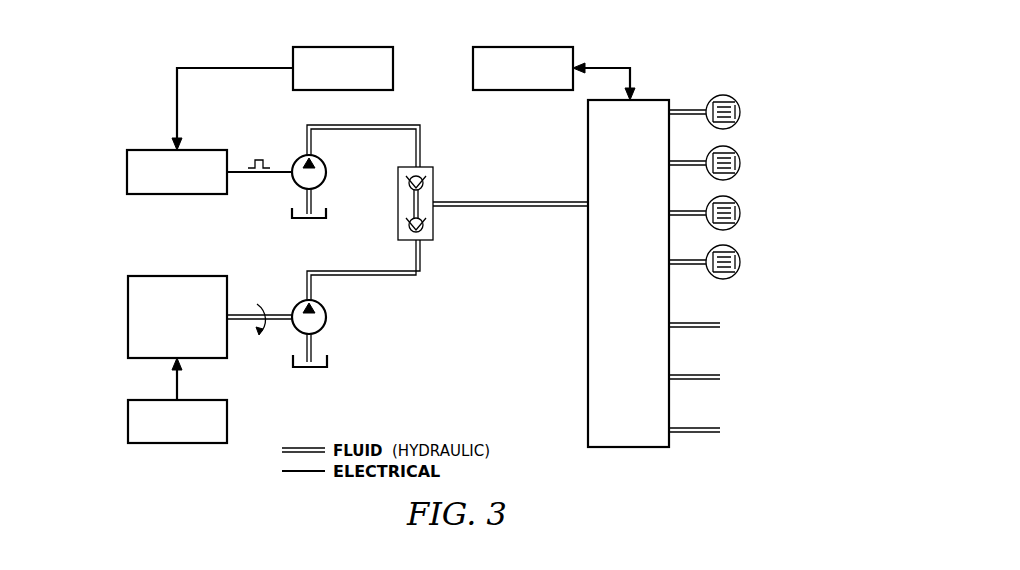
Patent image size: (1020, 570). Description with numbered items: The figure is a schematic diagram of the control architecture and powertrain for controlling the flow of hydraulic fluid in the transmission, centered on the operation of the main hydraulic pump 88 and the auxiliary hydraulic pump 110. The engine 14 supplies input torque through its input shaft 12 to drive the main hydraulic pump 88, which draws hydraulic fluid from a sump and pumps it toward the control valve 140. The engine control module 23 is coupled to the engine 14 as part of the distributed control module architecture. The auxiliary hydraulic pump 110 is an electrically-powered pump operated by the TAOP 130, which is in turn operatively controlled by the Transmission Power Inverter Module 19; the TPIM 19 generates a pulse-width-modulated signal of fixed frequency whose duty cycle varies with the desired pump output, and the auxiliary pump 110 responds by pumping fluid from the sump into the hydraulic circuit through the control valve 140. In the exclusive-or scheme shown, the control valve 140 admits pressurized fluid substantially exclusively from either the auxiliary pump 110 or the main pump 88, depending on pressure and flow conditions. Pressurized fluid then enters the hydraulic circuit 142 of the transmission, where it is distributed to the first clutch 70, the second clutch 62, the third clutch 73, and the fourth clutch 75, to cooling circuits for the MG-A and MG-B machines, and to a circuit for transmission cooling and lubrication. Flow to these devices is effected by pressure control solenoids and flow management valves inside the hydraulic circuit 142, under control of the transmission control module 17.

The Transmission Power Inverter Module 19 is at (342, 50).
The transmission control module 17 is at (523, 52).
The TAOP 130 is at (155, 155).
The auxiliary hydraulic pump 110 is at (324, 170).
The control valve 140 is at (427, 167).
The engine 14 is at (167, 346).
The input shaft 12 is at (242, 322).
The main hydraulic pump 88 is at (326, 318).
The engine control module 23 is at (150, 402).
The hydraulic circuit 142 is at (725, 286).
The clutch C1 70 is at (741, 113).
The clutch C2 62 is at (741, 163).
The clutch C3 73 is at (741, 213).
The clutch C4 75 is at (741, 262).